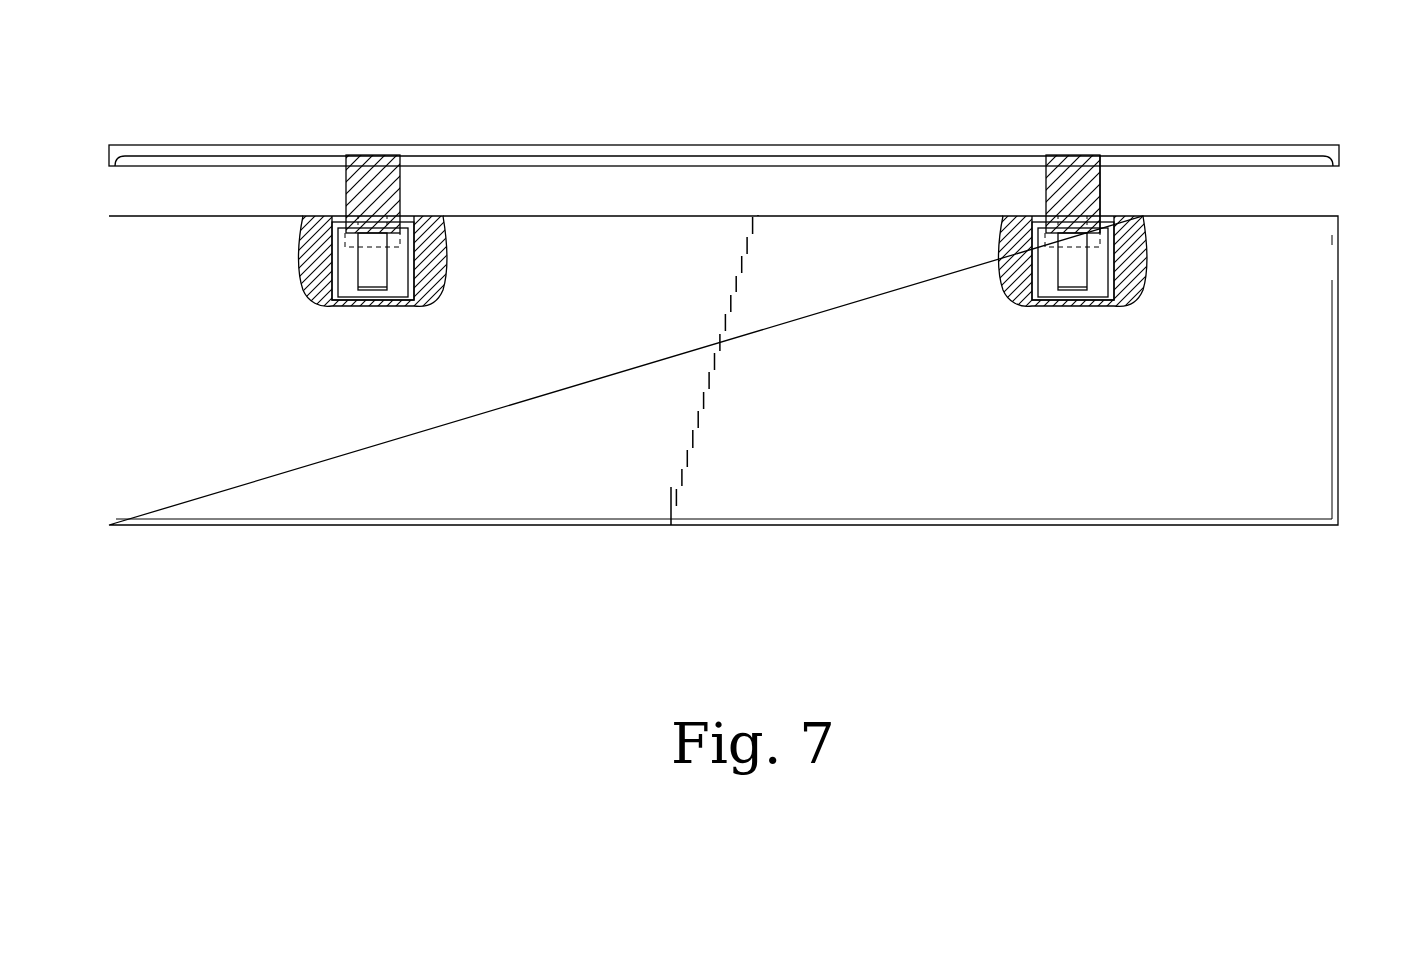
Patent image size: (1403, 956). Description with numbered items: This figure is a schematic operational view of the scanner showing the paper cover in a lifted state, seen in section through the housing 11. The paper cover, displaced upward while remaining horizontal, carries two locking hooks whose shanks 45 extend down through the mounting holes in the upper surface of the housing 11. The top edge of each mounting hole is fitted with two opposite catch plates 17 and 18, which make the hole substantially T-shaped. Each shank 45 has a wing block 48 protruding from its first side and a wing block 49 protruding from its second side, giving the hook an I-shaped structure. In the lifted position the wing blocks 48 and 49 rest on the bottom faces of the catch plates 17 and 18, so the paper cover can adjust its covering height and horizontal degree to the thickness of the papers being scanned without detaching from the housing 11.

The housing 11 is at (1182, 525).
The shank 45 is at (365, 182).
The catch plate 17 is at (1041, 216).
The catch plate 18 is at (1104, 216).
The wing block 48 is at (331, 303).
The wing block 49 is at (410, 237).